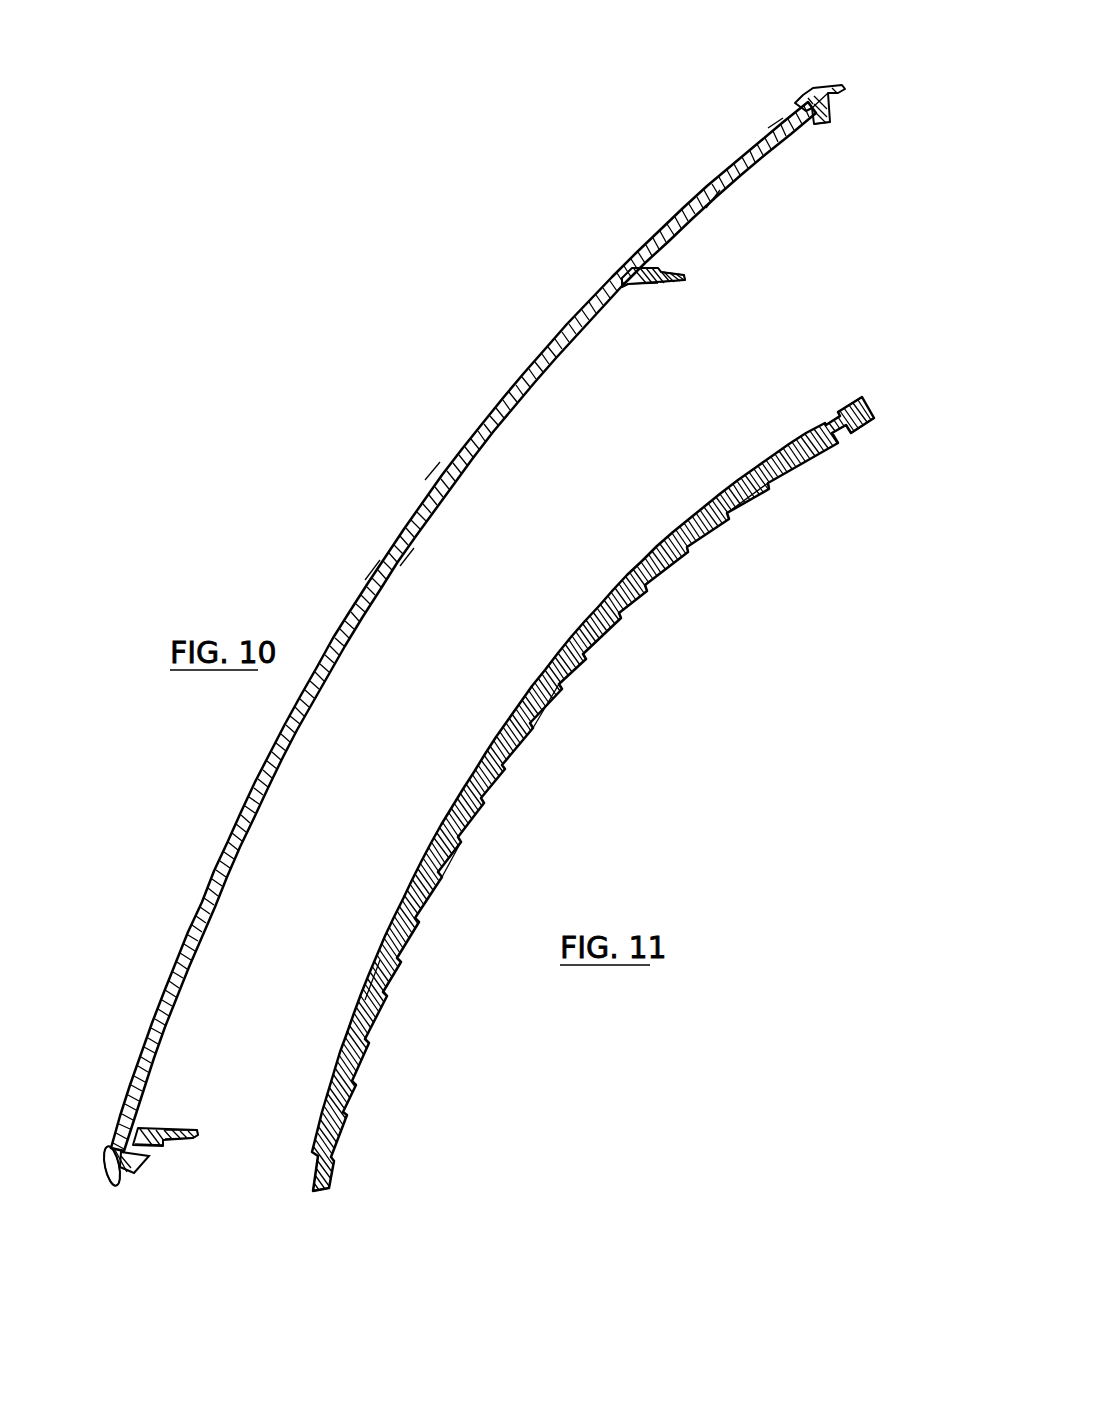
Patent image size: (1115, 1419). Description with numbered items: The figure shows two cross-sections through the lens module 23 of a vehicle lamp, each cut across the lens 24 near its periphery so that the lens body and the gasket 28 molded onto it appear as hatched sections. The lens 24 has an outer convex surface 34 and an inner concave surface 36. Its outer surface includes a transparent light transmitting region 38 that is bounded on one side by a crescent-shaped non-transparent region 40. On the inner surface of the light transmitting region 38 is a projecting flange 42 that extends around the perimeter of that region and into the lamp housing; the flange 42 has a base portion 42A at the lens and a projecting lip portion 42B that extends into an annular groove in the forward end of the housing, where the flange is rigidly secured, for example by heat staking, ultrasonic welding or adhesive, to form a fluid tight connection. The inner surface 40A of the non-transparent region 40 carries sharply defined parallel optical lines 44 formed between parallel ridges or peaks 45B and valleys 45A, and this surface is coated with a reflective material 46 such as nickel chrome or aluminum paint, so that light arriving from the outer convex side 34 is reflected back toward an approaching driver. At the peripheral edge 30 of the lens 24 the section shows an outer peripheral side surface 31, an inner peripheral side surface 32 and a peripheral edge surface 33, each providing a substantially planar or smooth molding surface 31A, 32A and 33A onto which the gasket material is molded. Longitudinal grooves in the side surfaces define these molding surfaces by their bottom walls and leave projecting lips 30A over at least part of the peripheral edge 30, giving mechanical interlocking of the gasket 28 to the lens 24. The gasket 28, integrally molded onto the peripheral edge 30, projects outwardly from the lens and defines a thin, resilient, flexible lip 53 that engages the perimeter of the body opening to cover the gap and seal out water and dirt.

In FIG. 10, the lens module 23 is at (796, 72).
In FIG. 10, the lens 24 is at (492, 385).
In FIG. 11, the lens 24 is at (636, 545).
In FIG. 10, the gasket 28 is at (815, 88).
In FIG. 10, the peripheral edge 30 is at (780, 106).
In FIG. 11, the peripheral edge 30 is at (869, 392).
In FIG. 11, the projecting lips 30A is at (853, 393).
In FIG. 11, the outer peripheral side surface 31 is at (832, 420).
In FIG. 11, the molding surface of outer peripheral side surface 31A is at (832, 413).
In FIG. 11, the inner peripheral side surface 32 is at (853, 443).
In FIG. 11, the molding surface of inner peripheral side surface 32A is at (873, 430).
In FIG. 11, the peripheral edge surface 33 is at (870, 405).
In FIG. 11, the molding surface of peripheral edge surface 33A is at (874, 412).
In FIG. 10, the outer convex surface 34 is at (370, 573).
In FIG. 11, the outer convex surface 34 is at (370, 977).
In FIG. 10, the inner concave surface 36 is at (407, 557).
In FIG. 11, the inner concave surface 36 is at (457, 862).
In FIG. 10, the light transmitting region 38 is at (430, 487).
In FIG. 10, the non-transparent region 40 is at (768, 131).
In FIG. 11, the non-transparent region 40 is at (735, 512).
In FIG. 11, the inner surface of non-transparent region 40A is at (685, 580).
In FIG. 10, the projecting flange 42 is at (682, 290).
In FIG. 10, the base portion 42A is at (636, 286).
In FIG. 10, the projecting lip portion 42B is at (672, 270).
In FIG. 10, the optical lines 44 is at (715, 198).
In FIG. 11, the optical lines 44 is at (538, 692).
In FIG. 11, the valleys 45A is at (785, 490).
In FIG. 11, the ridges or peaks 45B is at (553, 677).
In FIG. 11, the reflective material 46 is at (380, 1023).
In FIG. 10, the lip 53 is at (113, 1187).